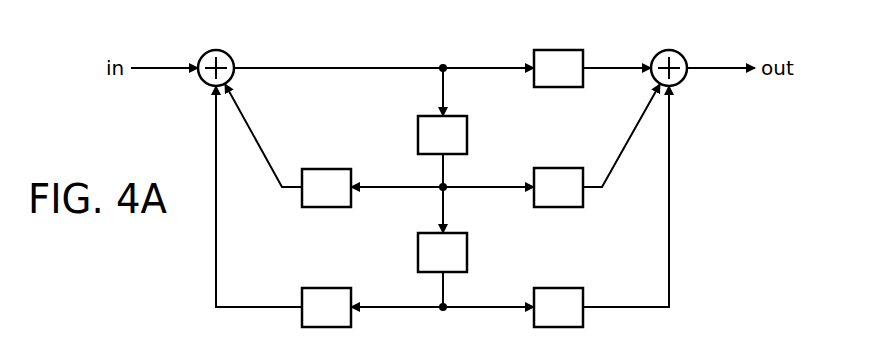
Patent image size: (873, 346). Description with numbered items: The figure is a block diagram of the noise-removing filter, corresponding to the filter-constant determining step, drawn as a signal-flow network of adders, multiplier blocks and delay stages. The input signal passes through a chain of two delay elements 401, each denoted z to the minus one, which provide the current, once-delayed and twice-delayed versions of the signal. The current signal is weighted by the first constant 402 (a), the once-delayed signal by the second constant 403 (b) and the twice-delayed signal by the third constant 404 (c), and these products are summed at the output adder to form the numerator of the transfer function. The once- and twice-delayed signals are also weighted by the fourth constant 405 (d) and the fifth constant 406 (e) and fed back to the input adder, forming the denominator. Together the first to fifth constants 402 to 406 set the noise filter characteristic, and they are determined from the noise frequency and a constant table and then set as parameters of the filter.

The delay element 401 is at (455, 116).
The first constant 402 is at (546, 50).
The second constant 403 is at (546, 168).
The third constant 404 is at (546, 288).
The fourth constant 405 is at (314, 169).
The fifth constant 406 is at (314, 288).